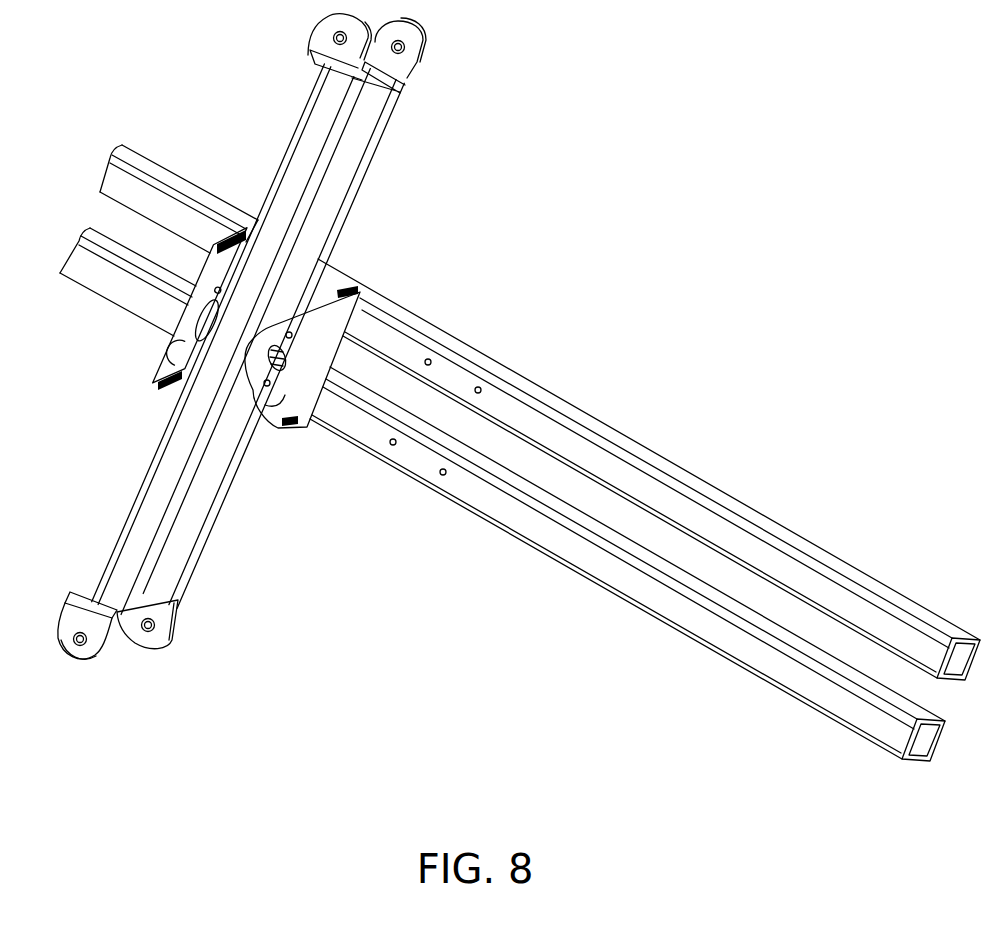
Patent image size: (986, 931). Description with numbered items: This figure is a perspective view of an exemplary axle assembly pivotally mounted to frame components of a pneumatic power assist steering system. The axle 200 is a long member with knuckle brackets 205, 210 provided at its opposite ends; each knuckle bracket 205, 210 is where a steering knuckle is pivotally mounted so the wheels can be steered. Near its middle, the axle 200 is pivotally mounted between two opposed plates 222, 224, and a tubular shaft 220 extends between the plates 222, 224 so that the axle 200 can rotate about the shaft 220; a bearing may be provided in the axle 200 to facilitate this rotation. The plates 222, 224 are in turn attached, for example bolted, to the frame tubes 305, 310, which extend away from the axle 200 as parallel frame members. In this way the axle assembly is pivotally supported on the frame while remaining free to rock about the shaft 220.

The axle 200 is at (358, 130).
The knuckle bracket 205 is at (150, 645).
The knuckle bracket 210 is at (423, 62).
The tubular shaft 220 is at (266, 408).
The plate 222 is at (295, 403).
The plate 224 is at (190, 345).
The frame tube 305 is at (581, 443).
The frame tube 310 is at (492, 503).